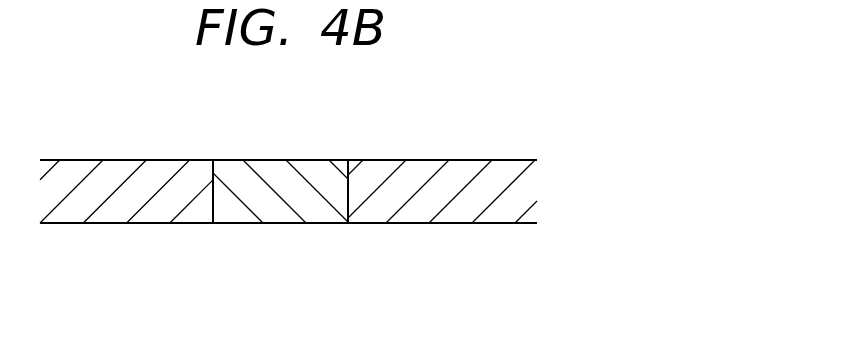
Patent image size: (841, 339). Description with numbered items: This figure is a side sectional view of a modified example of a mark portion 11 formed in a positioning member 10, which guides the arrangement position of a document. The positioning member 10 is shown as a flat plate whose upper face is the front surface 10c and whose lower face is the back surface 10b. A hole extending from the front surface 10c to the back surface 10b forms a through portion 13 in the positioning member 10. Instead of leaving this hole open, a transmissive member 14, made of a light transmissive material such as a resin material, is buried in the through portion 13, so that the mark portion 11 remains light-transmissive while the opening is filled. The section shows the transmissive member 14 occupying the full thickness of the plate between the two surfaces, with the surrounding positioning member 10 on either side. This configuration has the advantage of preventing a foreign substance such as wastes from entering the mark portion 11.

The positioning member 10 is at (118, 172).
The mark portion 11 is at (282, 159).
The through portion 13 is at (214, 187).
The transmissive member 14 is at (282, 224).
The front surface 10c is at (440, 159).
The back surface 10b is at (441, 224).